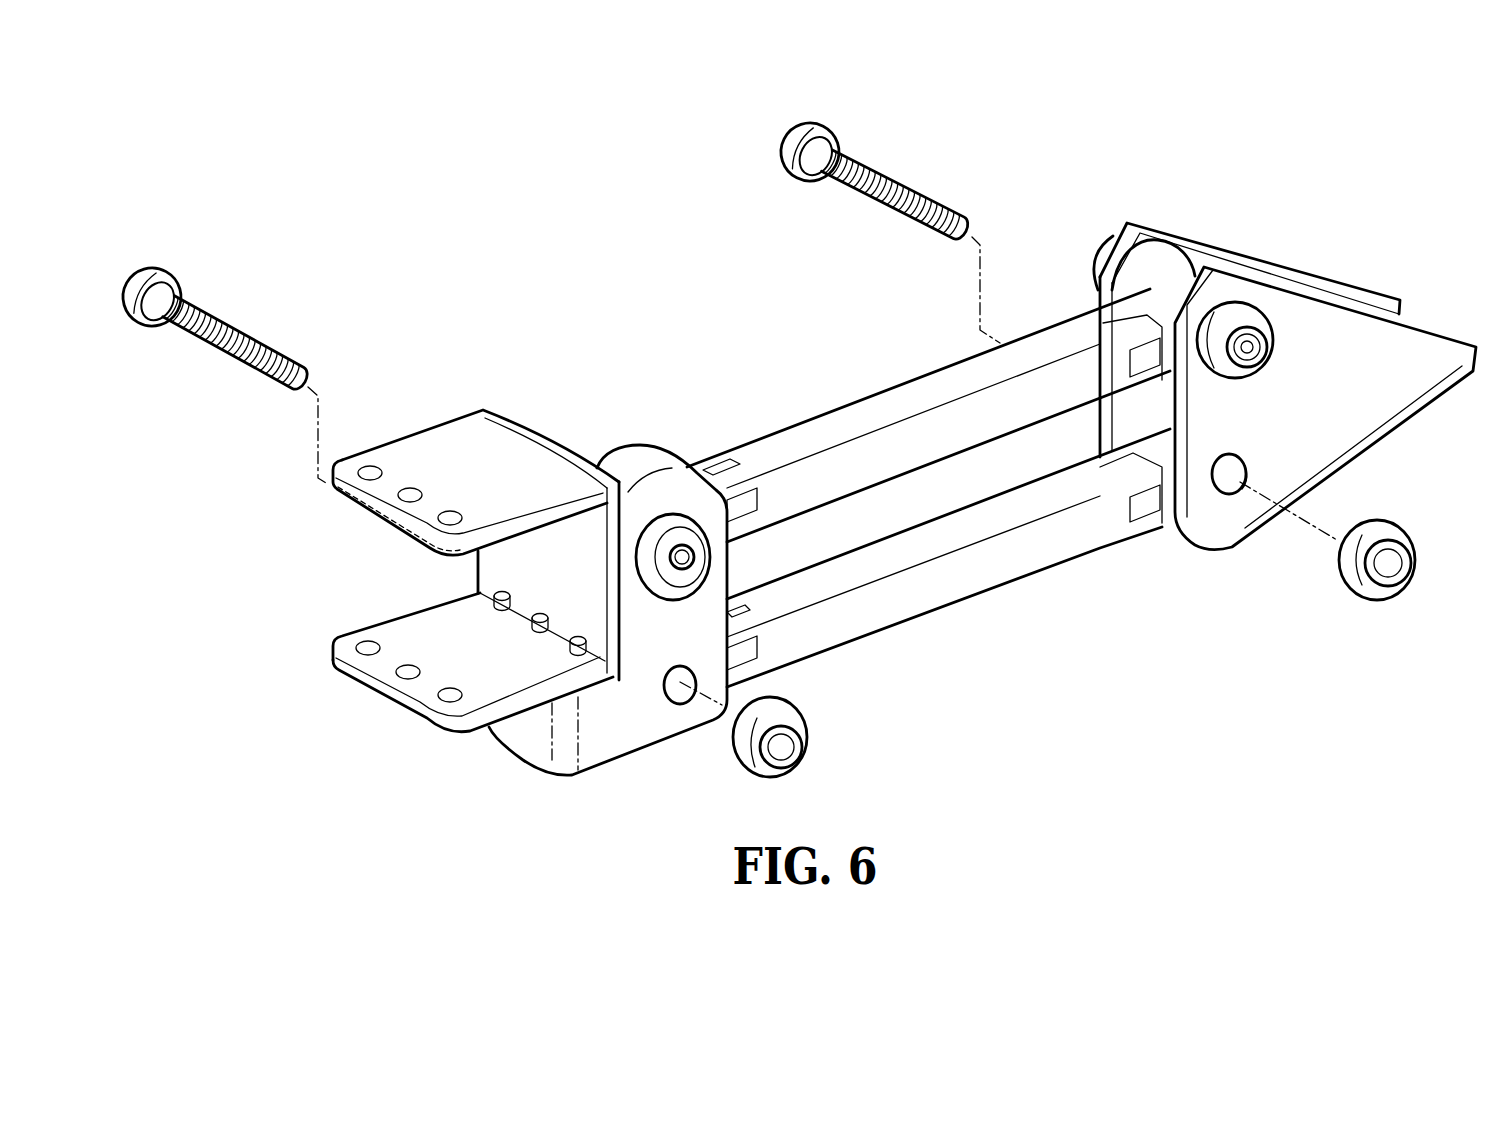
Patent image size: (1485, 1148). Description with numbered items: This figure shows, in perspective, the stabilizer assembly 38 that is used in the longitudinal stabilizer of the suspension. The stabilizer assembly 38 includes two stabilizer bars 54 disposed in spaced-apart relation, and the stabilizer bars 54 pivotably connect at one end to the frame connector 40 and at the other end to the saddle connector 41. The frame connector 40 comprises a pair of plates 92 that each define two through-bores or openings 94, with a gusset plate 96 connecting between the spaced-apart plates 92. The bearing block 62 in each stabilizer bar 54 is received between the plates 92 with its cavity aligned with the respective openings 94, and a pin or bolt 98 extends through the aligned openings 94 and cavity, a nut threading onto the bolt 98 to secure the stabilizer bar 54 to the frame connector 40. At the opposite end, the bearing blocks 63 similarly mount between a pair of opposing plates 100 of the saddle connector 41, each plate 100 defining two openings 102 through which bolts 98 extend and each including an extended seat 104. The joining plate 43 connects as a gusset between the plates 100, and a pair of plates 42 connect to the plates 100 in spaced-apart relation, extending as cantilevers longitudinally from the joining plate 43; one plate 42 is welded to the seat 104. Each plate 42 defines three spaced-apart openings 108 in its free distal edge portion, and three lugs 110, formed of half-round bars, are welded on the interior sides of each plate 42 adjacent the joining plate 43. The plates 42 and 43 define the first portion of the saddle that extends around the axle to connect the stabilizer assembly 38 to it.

The stabilizer assembly 38 is at (815, 312).
The frame connector 40 is at (1389, 487).
The saddle connector 41 is at (408, 380).
The plate 42 is at (440, 487).
The joining plate 43 is at (537, 579).
The stabilizer bar 54 is at (867, 413).
The bearing block 62 is at (1190, 265).
The bearing block 63 is at (643, 458).
The plate 92 is at (1267, 259).
The opening 94 is at (1213, 367).
The gusset plate 96 is at (1395, 492).
The bolt 98 is at (224, 322).
The plate 100 is at (560, 451).
The opening 102 is at (681, 702).
The extended seat 104 is at (518, 740).
The opening 108 is at (402, 498).
The lug 110 is at (488, 598).